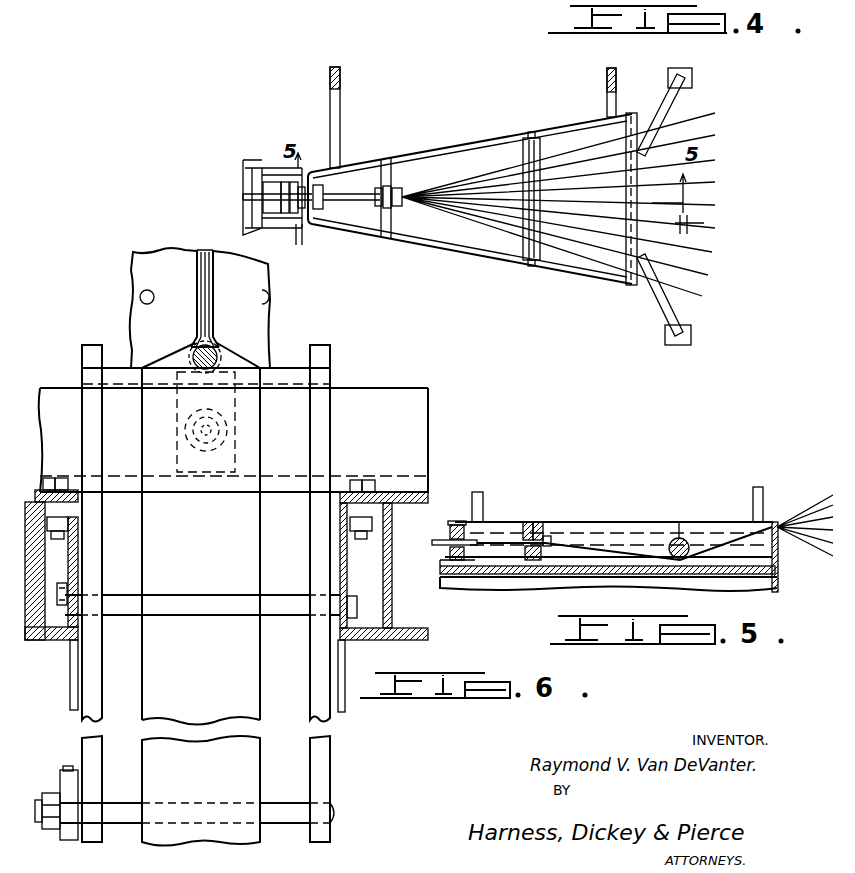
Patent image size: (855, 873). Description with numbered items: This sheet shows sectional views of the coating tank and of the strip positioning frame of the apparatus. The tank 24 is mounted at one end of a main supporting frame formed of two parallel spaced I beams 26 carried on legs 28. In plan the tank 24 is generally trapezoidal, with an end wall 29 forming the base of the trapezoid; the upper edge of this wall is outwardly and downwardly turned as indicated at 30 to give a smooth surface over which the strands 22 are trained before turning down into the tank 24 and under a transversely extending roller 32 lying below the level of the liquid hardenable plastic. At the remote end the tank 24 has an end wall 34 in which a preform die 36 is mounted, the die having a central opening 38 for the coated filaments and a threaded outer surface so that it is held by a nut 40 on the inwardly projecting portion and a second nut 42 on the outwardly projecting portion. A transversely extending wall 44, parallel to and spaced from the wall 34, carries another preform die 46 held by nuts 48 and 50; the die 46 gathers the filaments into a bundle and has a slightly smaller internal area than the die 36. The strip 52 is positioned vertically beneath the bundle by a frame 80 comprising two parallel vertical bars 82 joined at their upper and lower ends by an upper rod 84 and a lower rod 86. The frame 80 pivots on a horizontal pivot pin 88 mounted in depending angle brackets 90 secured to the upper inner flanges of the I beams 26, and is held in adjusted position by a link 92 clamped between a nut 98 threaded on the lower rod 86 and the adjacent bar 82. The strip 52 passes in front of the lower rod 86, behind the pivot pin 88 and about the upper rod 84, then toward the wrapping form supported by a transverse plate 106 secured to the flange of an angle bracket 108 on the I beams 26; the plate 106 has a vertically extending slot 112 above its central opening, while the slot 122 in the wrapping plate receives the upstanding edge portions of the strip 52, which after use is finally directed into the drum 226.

In FIG. 4, the strands 22 is at (700, 252).
In FIG. 5, the strands 22 is at (820, 512).
In FIG. 4, the tank 24 is at (436, 149).
In FIG. 5, the tank 24 is at (605, 522).
In FIG. 6, the I beams 26 is at (32, 584).
In FIG. 5, the I beams 26 is at (780, 588).
In FIG. 4, the legs 28 is at (673, 100).
In FIG. 5, the end wall 29 is at (770, 545).
In FIG. 4, the outwardly and downwardly turned upper edge 30 is at (630, 117).
In FIG. 5, the outwardly and downwardly turned upper edge 30 is at (778, 535).
In FIG. 4, the roller 32 is at (538, 138).
In FIG. 5, the roller 32 is at (685, 540).
In FIG. 4, the end wall 34 is at (335, 117).
In FIG. 5, the end wall 34 is at (450, 523).
In FIG. 4, the preform die 36 is at (326, 197).
In FIG. 5, the preform die 36 is at (470, 540).
In FIG. 5, the central opening 38 is at (445, 561).
In FIG. 5, the nut 40 is at (471, 499).
In FIG. 5, the second nut 42 is at (440, 540).
In FIG. 4, the transversely extending wall 44 is at (375, 168).
In FIG. 5, the transversely extending wall 44 is at (540, 522).
In FIG. 4, the preform die 46 is at (393, 178).
In FIG. 5, the preform die 46 is at (545, 537).
In FIG. 5, the nut 48 is at (542, 528).
In FIG. 5, the nut 50 is at (528, 522).
In FIG. 6, the strip 52 is at (195, 338).
In FIG. 6, the frame 80 is at (344, 355).
In FIG. 6, the bars 82 is at (82, 755).
In FIG. 6, the upper rod 84 is at (291, 368).
In FIG. 6, the lower rod 86 is at (262, 823).
In FIG. 6, the pivot pin 88 is at (268, 615).
In FIG. 6, the angle brackets 90 is at (72, 540).
In FIG. 6, the link 92 is at (62, 779).
In FIG. 6, the nut 98 is at (43, 835).
In FIG. 6, the plate 106 is at (268, 322).
In FIG. 6, the angle bracket 108 is at (410, 418).
In FIG. 6, the slot 112 is at (214, 280).
In FIG. 6, the slot 122 is at (205, 252).
In FIG. 4, the drum 226 is at (303, 4).